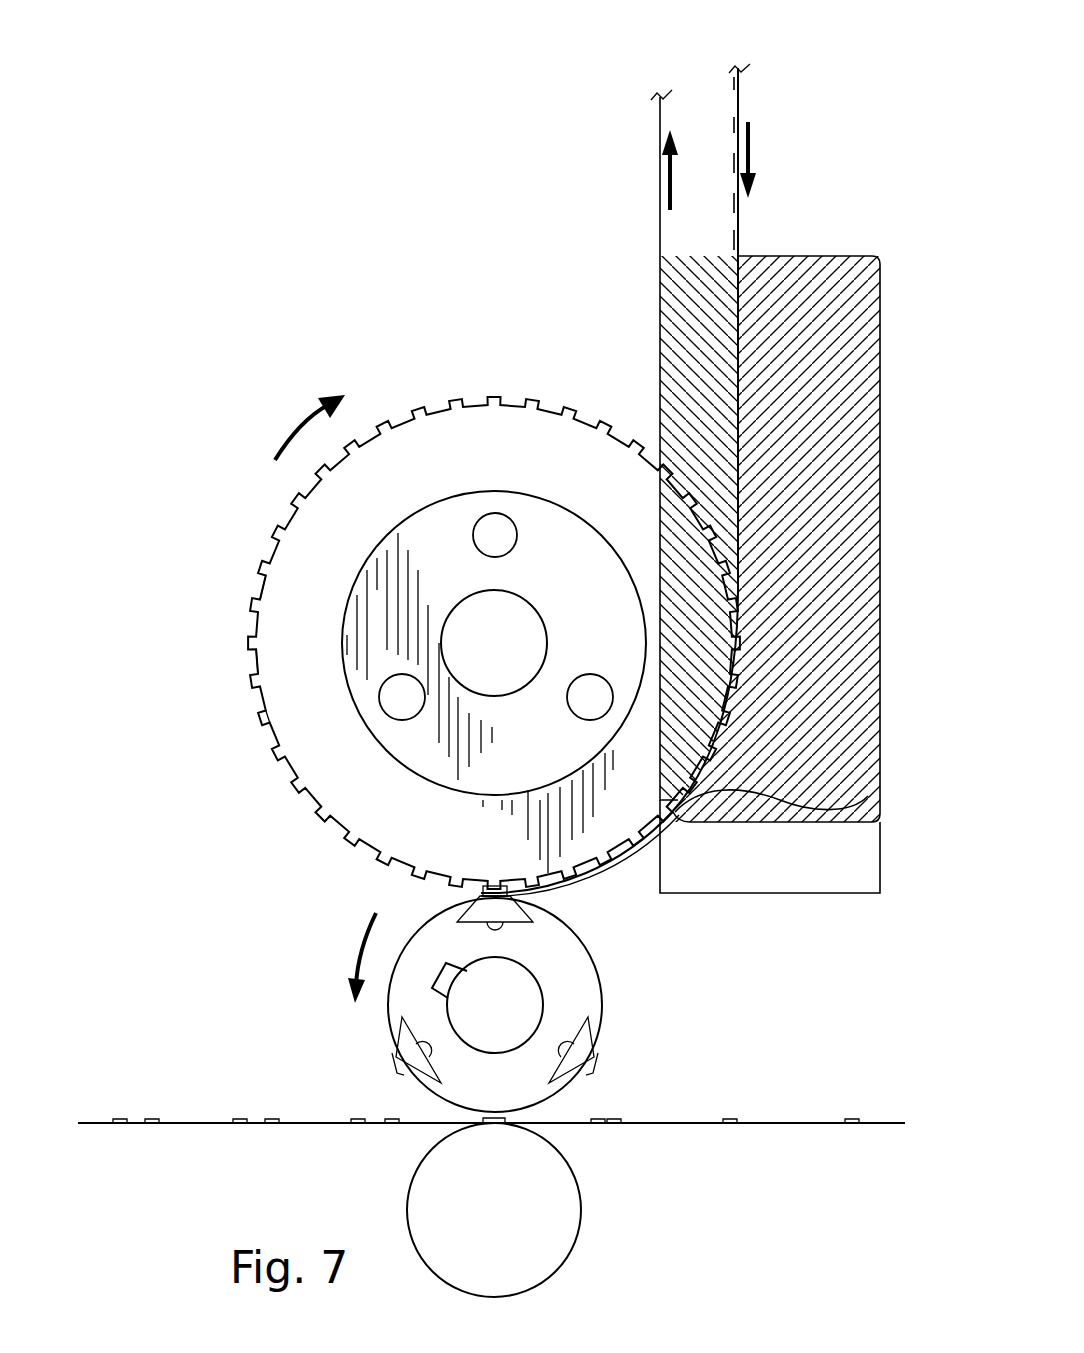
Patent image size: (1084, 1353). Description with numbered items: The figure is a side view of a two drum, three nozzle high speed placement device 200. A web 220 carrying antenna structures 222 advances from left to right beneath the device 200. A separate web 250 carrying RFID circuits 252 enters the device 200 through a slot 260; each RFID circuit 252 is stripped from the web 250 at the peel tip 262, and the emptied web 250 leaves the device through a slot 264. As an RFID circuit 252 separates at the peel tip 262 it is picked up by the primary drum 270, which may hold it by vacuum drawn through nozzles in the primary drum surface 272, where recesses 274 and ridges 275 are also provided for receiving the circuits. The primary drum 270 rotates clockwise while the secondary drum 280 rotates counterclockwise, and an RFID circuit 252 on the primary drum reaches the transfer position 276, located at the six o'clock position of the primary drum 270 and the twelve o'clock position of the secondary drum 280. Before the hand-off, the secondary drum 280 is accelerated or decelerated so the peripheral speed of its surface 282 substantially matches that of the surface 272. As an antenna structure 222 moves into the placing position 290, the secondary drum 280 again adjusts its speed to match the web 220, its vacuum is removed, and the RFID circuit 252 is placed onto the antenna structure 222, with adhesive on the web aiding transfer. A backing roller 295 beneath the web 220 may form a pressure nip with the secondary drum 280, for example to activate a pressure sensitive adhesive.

The high speed placement device 200 is at (362, 254).
The web 220 is at (295, 1125).
The antenna structures 222 is at (122, 1118).
The web 250 is at (742, 102).
The RFID circuits 252 is at (731, 119).
The slot 260 is at (742, 256).
The peel tip 262 is at (868, 796).
The slot 264 is at (659, 258).
The primary drum 270 is at (390, 797).
The primary drum surface 272 is at (258, 681).
The recesses 274 is at (255, 607).
The ridges 275 is at (267, 732).
The transfer position 276 is at (508, 892).
The secondary drum 280 is at (568, 992).
The secondary drum surface 282 is at (393, 1068).
The placing position 290 is at (548, 1108).
The backing roller 295 is at (545, 1235).